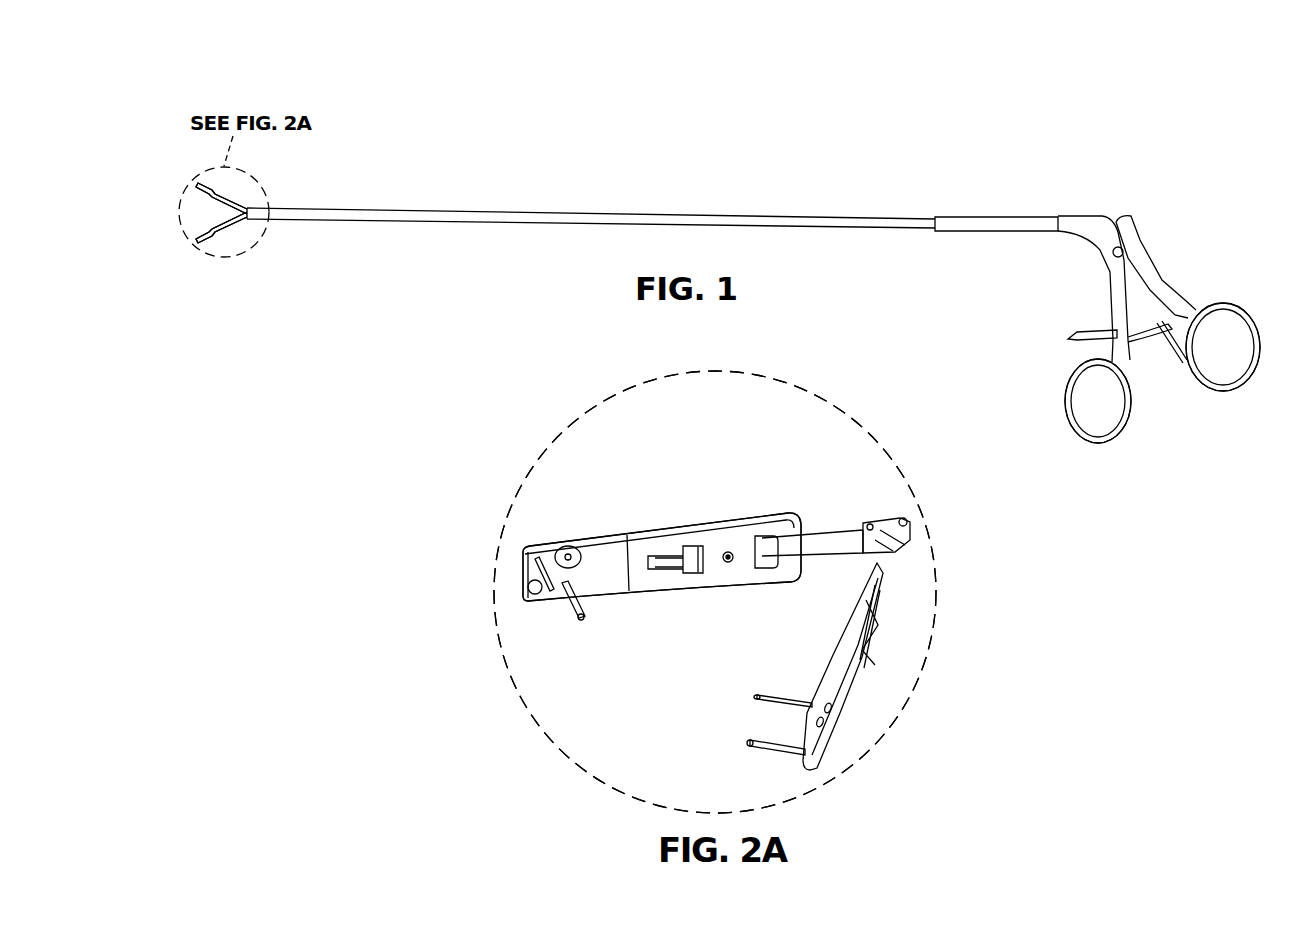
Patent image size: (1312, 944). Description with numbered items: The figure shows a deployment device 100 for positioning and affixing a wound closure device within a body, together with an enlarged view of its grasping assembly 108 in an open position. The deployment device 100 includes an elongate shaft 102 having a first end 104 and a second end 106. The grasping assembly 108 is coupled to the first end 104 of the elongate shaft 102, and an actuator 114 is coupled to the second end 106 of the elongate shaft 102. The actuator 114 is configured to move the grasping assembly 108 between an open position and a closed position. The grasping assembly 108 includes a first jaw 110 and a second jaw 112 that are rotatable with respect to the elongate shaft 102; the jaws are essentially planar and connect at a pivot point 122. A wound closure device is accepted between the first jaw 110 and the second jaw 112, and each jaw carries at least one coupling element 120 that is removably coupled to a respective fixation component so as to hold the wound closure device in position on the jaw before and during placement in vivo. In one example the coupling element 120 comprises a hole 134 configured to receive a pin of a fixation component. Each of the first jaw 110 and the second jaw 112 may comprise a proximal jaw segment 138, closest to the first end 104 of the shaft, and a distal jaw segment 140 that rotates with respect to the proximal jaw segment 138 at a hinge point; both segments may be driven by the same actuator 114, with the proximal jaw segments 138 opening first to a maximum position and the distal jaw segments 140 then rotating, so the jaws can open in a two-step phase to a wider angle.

In FIG. 1, the deployment device 100 is at (227, 68).
In FIG. 1, the elongate shaft 102 is at (668, 221).
In FIG. 1, the first end 104 is at (255, 195).
In FIG. 1, the second end 106 is at (1057, 208).
In FIG. 1, the grasping assembly 108 is at (218, 258).
In FIG. 2A, the grasping assembly 108 is at (563, 425).
In FIG. 2A, the first jaw 110 is at (710, 517).
In FIG. 2A, the second jaw 112 is at (847, 717).
In FIG. 1, the actuator 114 is at (1172, 395).
In FIG. 2A, the coupling element 120 is at (586, 621).
In FIG. 2A, the pivot point 122 is at (905, 518).
In FIG. 2A, the hole 134 is at (560, 550).
In FIG. 2A, the proximal jaw segment 138 is at (835, 527).
In FIG. 2A, the distal jaw segment 140 is at (624, 537).